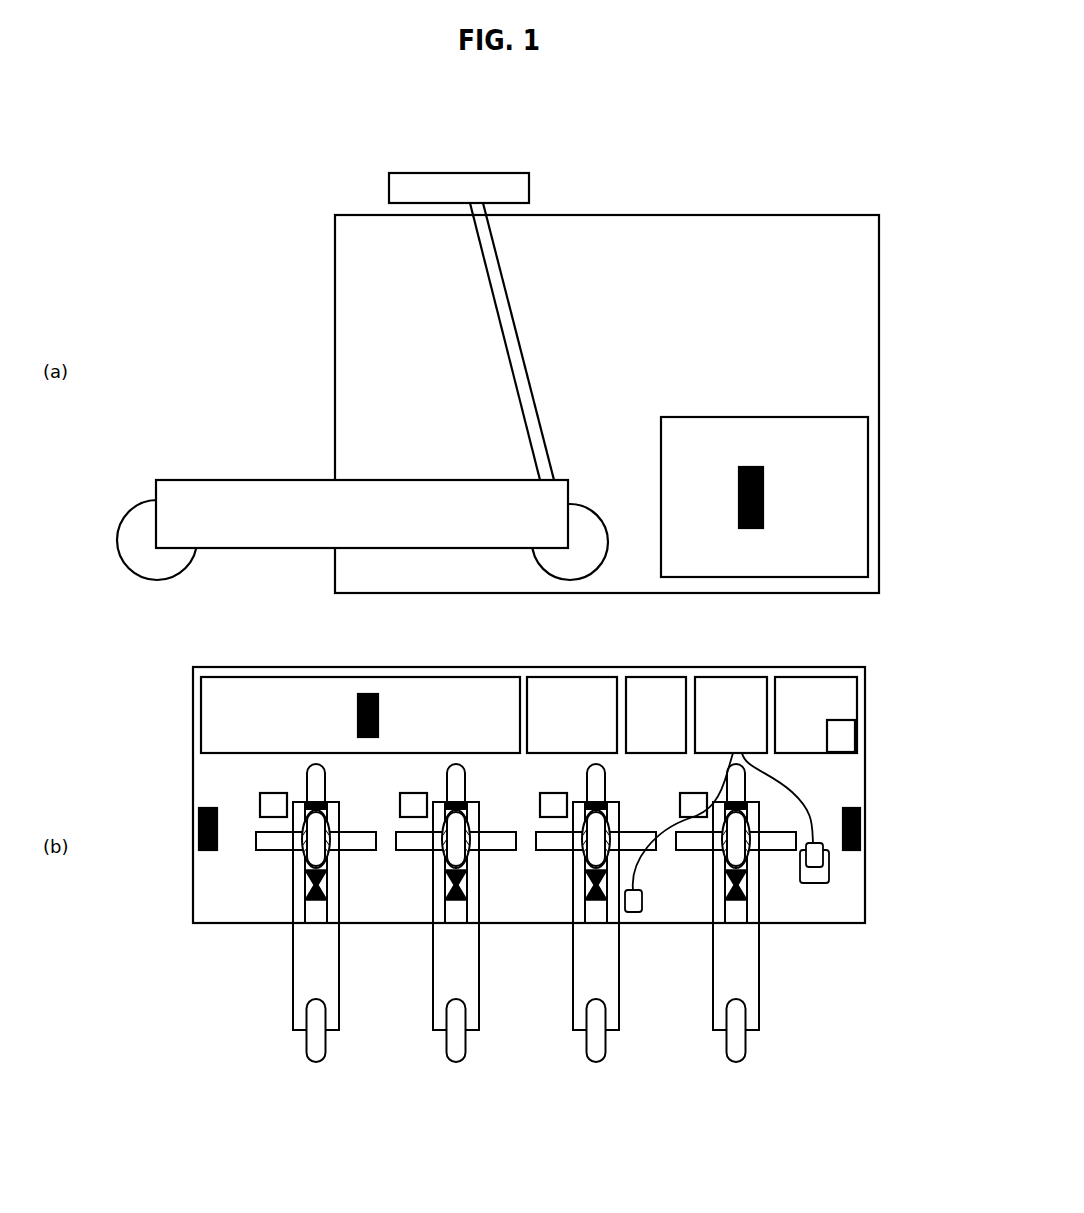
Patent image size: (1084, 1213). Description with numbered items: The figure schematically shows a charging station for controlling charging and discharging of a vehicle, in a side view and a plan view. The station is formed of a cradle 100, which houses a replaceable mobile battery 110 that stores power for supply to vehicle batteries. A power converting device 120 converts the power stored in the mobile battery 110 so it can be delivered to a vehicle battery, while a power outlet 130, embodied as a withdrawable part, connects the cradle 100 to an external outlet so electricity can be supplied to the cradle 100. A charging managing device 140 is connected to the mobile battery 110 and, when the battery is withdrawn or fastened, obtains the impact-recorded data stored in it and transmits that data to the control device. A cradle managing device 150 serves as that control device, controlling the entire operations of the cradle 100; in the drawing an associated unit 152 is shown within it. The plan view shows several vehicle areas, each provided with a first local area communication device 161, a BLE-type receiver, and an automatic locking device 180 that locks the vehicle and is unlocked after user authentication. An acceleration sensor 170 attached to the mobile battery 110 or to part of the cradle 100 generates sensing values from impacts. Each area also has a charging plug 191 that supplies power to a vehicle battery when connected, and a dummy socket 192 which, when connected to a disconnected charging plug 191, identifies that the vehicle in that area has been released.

The cradle 100 is at (879, 262).
The mobile battery 110 is at (661, 448).
The power converting device 120 is at (597, 677).
The power outlet 130 is at (667, 677).
The charging managing device 140 is at (742, 677).
The cradle managing device 150 is at (828, 677).
The communication unit 152 is at (848, 735).
The first local area communication device 161 is at (260, 806).
The acceleration sensor 170 is at (199, 830).
The automatic locking device 180 is at (305, 885).
The charging plug 191 is at (633, 912).
The dummy socket 192 is at (812, 883).